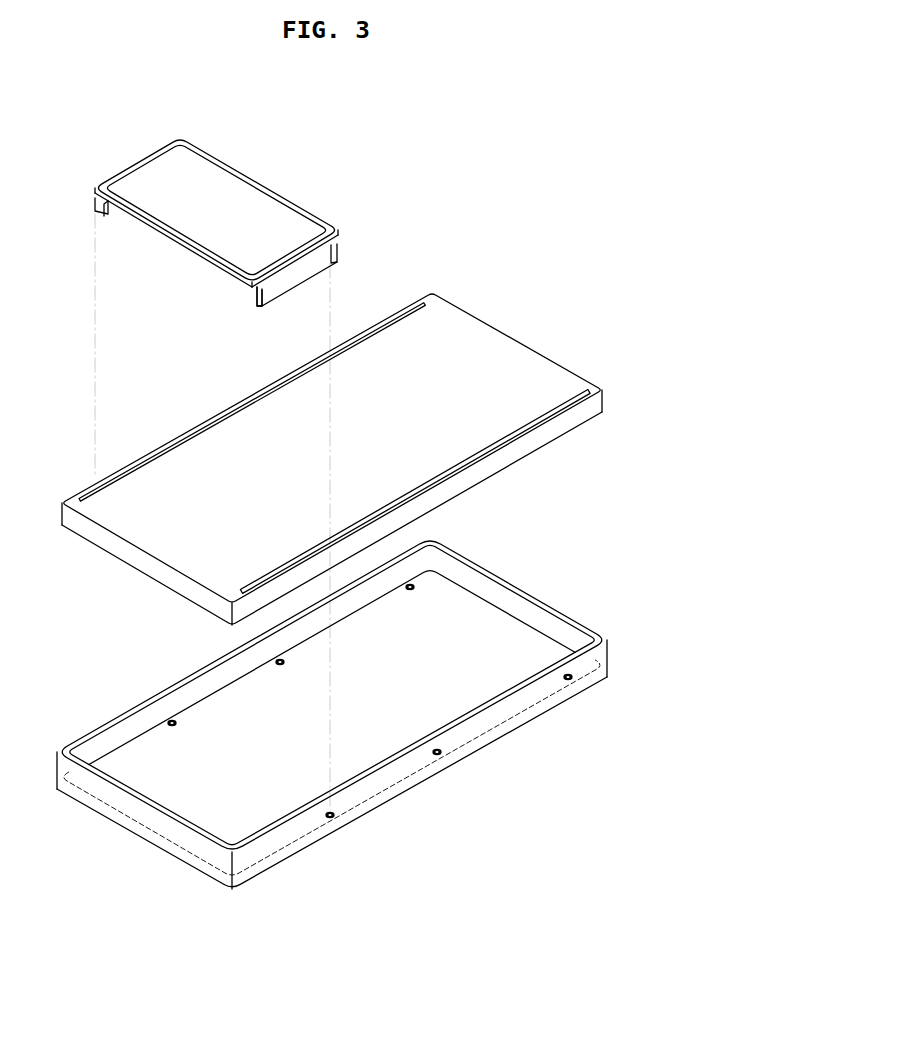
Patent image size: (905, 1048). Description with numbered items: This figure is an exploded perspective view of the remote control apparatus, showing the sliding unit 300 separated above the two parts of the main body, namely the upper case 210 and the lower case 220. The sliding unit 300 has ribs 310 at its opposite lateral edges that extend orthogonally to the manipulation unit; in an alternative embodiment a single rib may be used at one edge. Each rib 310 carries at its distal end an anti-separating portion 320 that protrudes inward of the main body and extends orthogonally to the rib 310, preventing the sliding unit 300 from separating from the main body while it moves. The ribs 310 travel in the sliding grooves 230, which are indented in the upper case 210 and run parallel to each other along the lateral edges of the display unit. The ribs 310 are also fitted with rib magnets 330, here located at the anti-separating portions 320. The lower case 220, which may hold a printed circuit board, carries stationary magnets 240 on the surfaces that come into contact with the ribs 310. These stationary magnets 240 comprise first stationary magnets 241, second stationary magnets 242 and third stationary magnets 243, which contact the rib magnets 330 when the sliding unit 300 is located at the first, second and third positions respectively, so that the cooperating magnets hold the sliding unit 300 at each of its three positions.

The sliding unit 300 is at (259, 226).
The rib 310 is at (340, 243).
The anti-separating portion 320 is at (254, 302).
The rib magnet 330 is at (333, 262).
The upper case 210 is at (332, 442).
The sliding groove 230 is at (208, 420).
The lower case 220 is at (332, 745).
The stationary magnets 240 is at (372, 786).
The first stationary magnet 241 is at (570, 680).
The second stationary magnet 242 is at (331, 817).
The third stationary magnet 243 is at (439, 755).